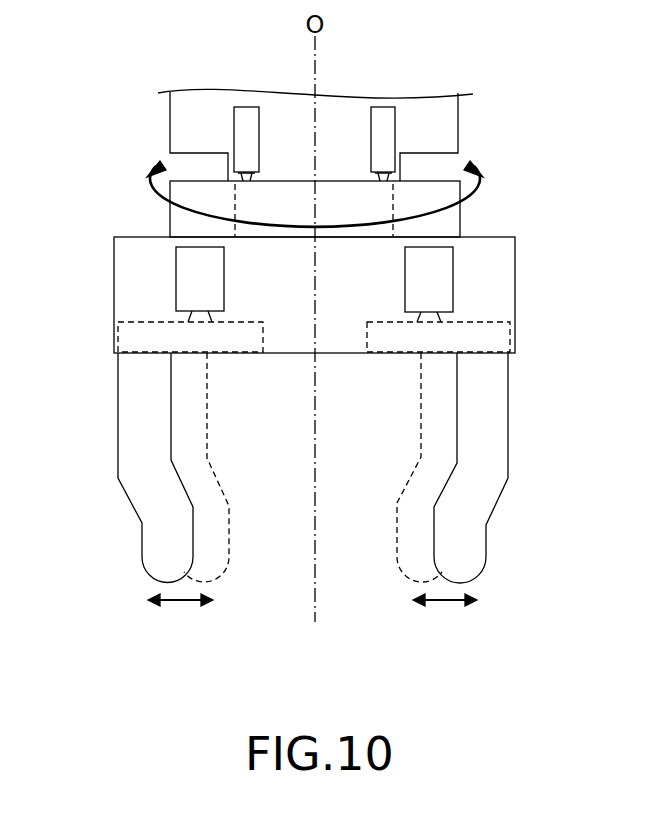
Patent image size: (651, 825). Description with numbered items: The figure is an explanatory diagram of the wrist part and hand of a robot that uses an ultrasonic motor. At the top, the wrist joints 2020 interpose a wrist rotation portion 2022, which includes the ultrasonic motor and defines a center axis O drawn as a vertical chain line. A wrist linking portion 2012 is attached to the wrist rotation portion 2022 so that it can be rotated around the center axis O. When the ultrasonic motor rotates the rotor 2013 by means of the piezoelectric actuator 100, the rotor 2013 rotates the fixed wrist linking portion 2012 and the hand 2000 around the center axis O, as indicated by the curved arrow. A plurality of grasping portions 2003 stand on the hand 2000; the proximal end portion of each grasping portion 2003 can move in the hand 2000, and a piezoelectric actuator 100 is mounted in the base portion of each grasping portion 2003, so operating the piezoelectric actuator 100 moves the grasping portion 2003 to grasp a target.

The piezoelectric actuator 100 is at (242, 106).
The hand 2000 is at (515, 295).
The grasping portion 2003 is at (117, 432).
The wrist linking portion 2012 is at (462, 222).
The rotor 2013 is at (395, 201).
The wrist joint 2020 is at (170, 130).
The wrist rotation portion 2022 is at (345, 157).